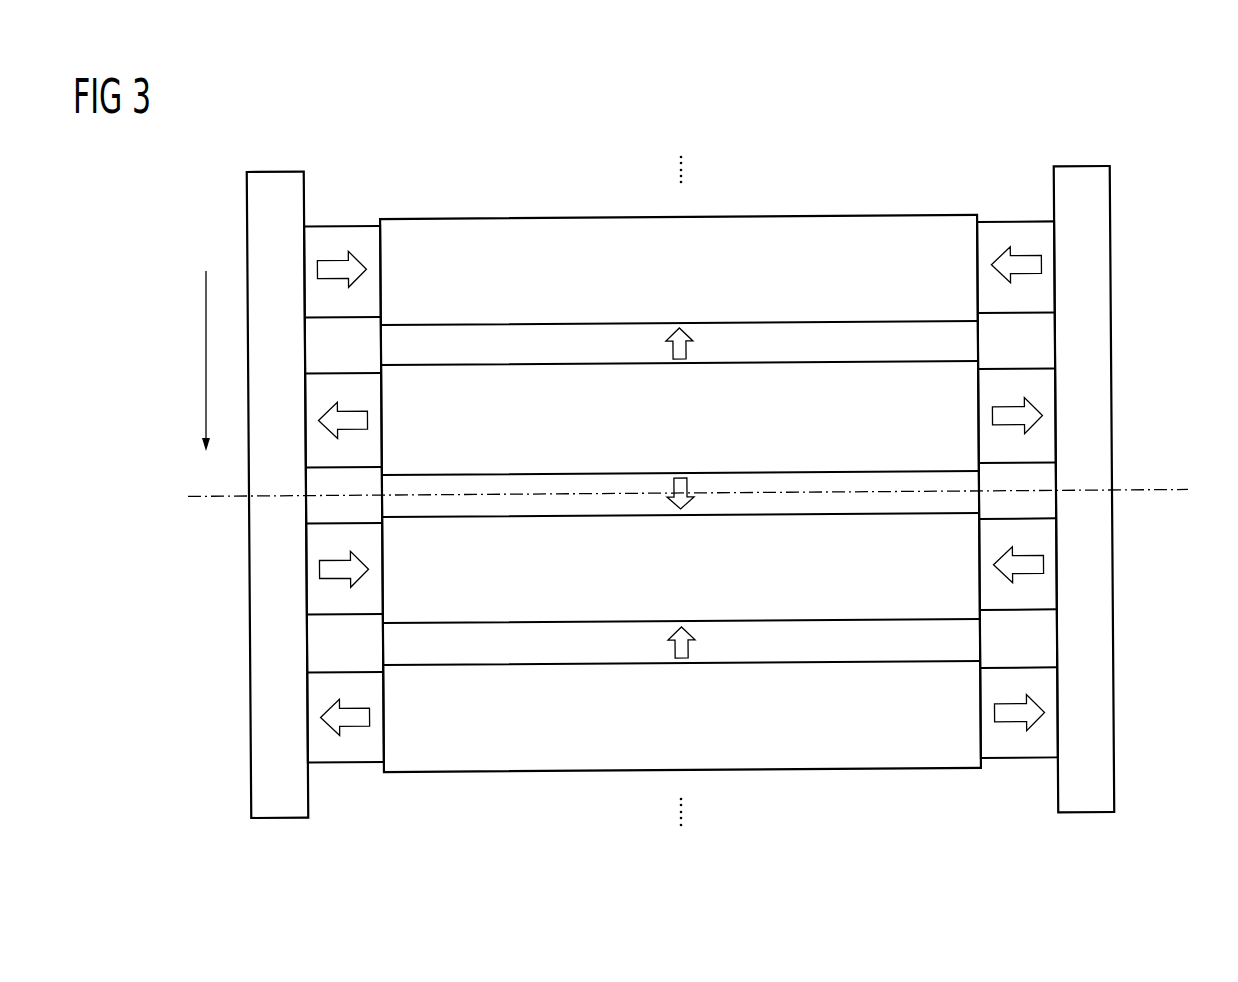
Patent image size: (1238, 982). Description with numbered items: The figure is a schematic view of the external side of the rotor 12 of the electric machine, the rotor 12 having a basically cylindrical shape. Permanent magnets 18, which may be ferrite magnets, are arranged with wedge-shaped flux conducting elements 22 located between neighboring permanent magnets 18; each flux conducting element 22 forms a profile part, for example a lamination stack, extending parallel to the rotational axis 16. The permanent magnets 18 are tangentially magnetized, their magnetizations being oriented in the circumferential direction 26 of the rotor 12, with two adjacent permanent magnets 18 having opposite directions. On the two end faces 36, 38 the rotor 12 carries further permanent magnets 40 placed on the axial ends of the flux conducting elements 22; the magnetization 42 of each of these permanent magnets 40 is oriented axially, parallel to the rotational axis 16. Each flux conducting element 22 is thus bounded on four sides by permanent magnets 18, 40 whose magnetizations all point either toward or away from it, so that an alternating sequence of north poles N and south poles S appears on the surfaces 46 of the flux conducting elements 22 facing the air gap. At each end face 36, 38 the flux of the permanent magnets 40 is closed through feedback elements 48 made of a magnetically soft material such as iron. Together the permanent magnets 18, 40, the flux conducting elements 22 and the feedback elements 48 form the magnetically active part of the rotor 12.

The rotor 12 is at (1140, 110).
The rotational axis 16 is at (1160, 490).
The permanent magnets 18 is at (900, 335).
The flux conducting elements 22 is at (921, 228).
The circumferential direction 26 is at (205, 350).
The end face 36 is at (1160, 326).
The end face 38 is at (216, 591).
The permanent magnets 40 is at (338, 239).
The magnetization 42 is at (332, 279).
The surfaces 46 is at (862, 205).
The feedback elements 48 is at (262, 215).